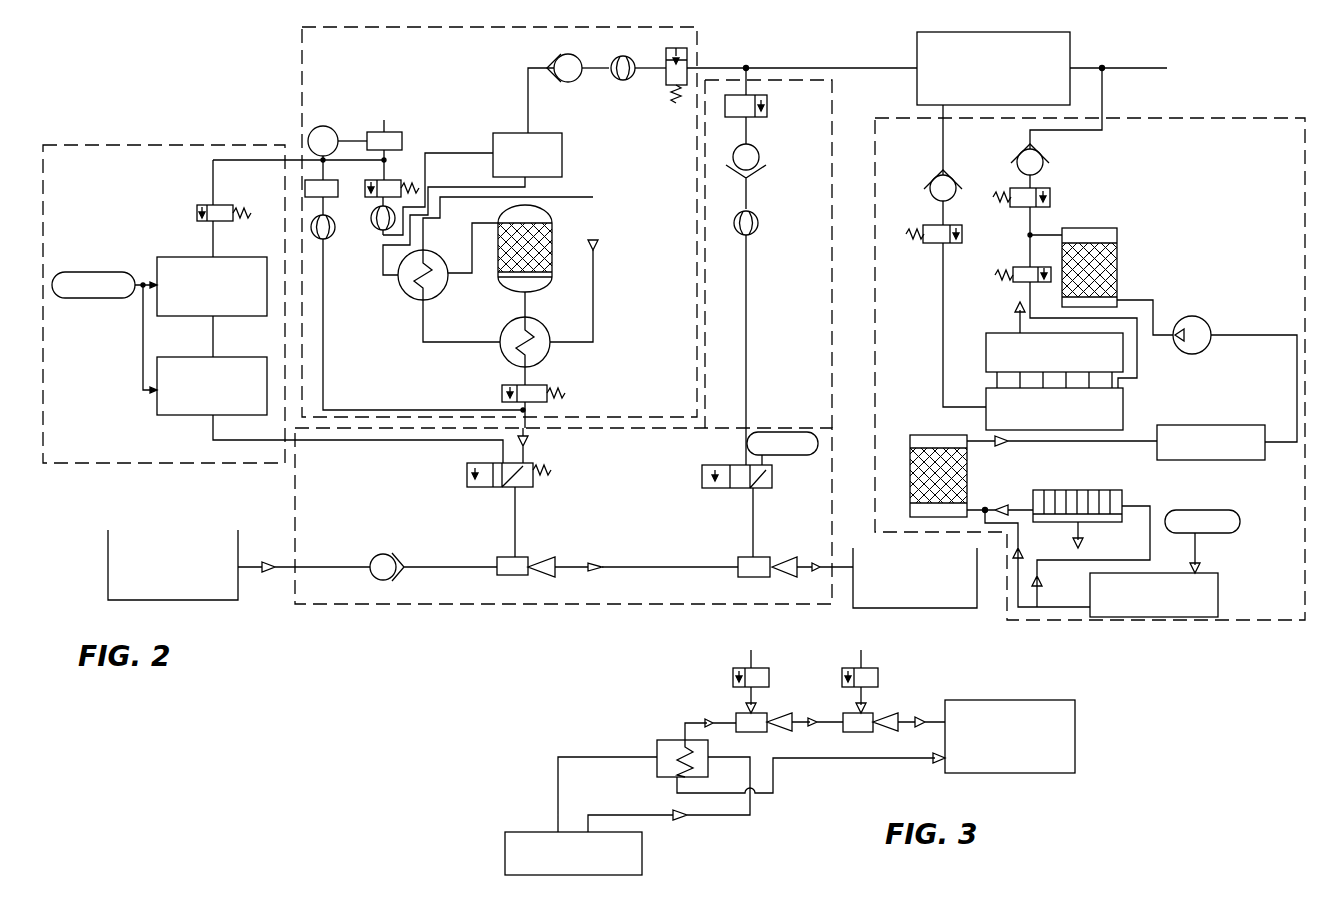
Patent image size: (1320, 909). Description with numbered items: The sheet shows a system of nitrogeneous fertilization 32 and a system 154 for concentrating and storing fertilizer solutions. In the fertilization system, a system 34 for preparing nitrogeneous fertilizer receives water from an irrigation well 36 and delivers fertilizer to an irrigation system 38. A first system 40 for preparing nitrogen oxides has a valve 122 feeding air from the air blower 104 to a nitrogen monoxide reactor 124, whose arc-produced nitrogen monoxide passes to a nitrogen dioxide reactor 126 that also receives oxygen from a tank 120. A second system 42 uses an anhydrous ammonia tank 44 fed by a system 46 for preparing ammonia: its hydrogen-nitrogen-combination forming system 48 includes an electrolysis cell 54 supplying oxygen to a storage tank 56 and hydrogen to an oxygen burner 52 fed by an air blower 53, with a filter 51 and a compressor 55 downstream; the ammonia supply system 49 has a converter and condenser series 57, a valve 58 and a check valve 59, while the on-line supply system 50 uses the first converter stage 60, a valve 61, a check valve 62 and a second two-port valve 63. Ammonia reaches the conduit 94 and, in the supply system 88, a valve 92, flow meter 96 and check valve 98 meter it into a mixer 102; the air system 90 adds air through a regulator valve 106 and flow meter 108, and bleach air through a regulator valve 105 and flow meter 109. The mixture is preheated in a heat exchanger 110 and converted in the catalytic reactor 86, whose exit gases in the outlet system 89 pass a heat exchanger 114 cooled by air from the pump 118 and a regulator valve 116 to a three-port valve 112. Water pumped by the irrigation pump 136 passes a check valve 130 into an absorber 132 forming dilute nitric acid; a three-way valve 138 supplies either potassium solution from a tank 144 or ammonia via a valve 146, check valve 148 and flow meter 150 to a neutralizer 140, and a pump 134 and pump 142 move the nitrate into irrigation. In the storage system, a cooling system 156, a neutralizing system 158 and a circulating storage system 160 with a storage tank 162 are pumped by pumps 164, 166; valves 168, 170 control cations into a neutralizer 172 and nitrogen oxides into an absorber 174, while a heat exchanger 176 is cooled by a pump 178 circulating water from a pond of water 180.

In FIG. 2, the system of nitrogeneous fertilization 32 is at (229, 90).
In FIG. 2, the system for preparing nitrogeneous fertilizer 34 is at (642, 604).
In FIG. 2, the irrigation well 36 is at (200, 600).
In FIG. 2, the irrigation system 38 is at (935, 608).
In FIG. 2, the first system for preparing nitrogen oxides 40 is at (183, 150).
In FIG. 2, the second system for preparing nitrogen oxides 42 is at (697, 53).
In FIG. 2, the anhydrous ammonia tank 44 is at (1072, 48).
In FIG. 2, the system for preparing anhydrous ammonia 46 is at (880, 472).
In FIG. 2, the hydrogen-nitrogen-combination forming system 48 is at (1094, 479).
In FIG. 2, the anhydrous ammonia supply system 49 is at (914, 349).
In FIG. 2, the on-line gaseous ammonia supply system 50 is at (1137, 277).
In FIG. 2, the filter 51 is at (1120, 494).
In FIG. 2, the oxygen burner 52 is at (926, 435).
In FIG. 2, the air blower 53 is at (1040, 578).
In FIG. 2, the electrolysis cell 54 is at (1245, 460).
In FIG. 2, the compressor 55 is at (1205, 322).
In FIG. 2, the oxygen storage tank 56 is at (1240, 516).
In FIG. 2, the converter and condenser series 57 is at (986, 362).
In FIG. 2, the valve 58 is at (955, 226).
In FIG. 2, the check valve 59 is at (930, 195).
In FIG. 2, the first converter stage 60 is at (1118, 234).
In FIG. 2, the valve 61 is at (1050, 196).
In FIG. 2, the check valve 62 is at (1045, 166).
In FIG. 2, the second two-port valve 63 is at (1025, 267).
In FIG. 2, the reactor 86 is at (580, 242).
In FIG. 2, the system for supplying anhydrous ammonia to the reactor 88 is at (592, 99).
In FIG. 2, the system for supplying nitrogen oxides and waste gases 89 is at (554, 377).
In FIG. 2, the system for supplying air 90 is at (405, 138).
In FIG. 2, the two-port infinitely-variable normally-closed valve 92 is at (706, 65).
In FIG. 2, the conduit 94 is at (813, 68).
In FIG. 2, the flow meter 96 is at (631, 57).
In FIG. 2, the check valve 98 is at (576, 57).
In FIG. 2, the mixer 102 is at (562, 141).
In FIG. 2, the air blower 104 is at (377, 132).
In FIG. 2, the two-stage regulator valve 105 is at (333, 182).
In FIG. 2, the two-port infinitely-variable two-stage regulator valve 106 is at (375, 200).
In FIG. 2, the flow meter 108 is at (378, 230).
In FIG. 2, the flow meter 109 is at (325, 240).
In FIG. 2, the heat exchanger 110 is at (440, 290).
In FIG. 2, the three-position three-port valve 112 is at (535, 480).
In FIG. 2, the heat exchanger 114 is at (545, 330).
In FIG. 2, the two-port infinitely-variable normally-closed two-stage regulator valve 116 is at (543, 402).
In FIG. 2, the pump 118 is at (600, 250).
In FIG. 2, the tank 120 is at (97, 273).
In FIG. 2, the two-port infinitely-variable normally-closed valve 122 is at (200, 207).
In FIG. 2, the nitrogen monoxide reactor 124 is at (185, 317).
In FIG. 2, the nitrogen dioxide reactor 126 is at (185, 416).
In FIG. 2, the check valve 130 is at (372, 556).
In FIG. 2, the absorber 132 is at (515, 576).
In FIG. 2, the pump 134 is at (600, 560).
In FIG. 2, the irrigation pump 136 is at (270, 576).
In FIG. 2, the three-way three-port valve 138 is at (712, 490).
In FIG. 2, the neutralizer 140 is at (755, 577).
In FIG. 2, the pump 142 is at (815, 575).
In FIG. 2, the tank 144 is at (775, 433).
In FIG. 2, the two-port infinitely-variable normally-closed valve 146 is at (768, 110).
In FIG. 2, the check valve 148 is at (762, 155).
In FIG. 2, the flow meter 150 is at (760, 220).
In FIG. 3, the system for concentrating and storing fertilizers 154 is at (643, 681).
In FIG. 3, the cooling system 156 is at (718, 818).
In FIG. 3, the neutralizing system 158 is at (793, 693).
In FIG. 3, the circulating storage system 160 is at (945, 700).
In FIG. 3, the storage tank 162 is at (1020, 773).
In FIG. 3, the pump 164 is at (922, 716).
In FIG. 3, the pump 166 is at (920, 764).
In FIG. 3, the two-port continuously-variable valve 168 is at (740, 668).
In FIG. 3, the two-port continuously-variable valve 170 is at (870, 668).
In FIG. 3, the neutralizer 172 is at (757, 732).
In FIG. 3, the absorber 174 is at (865, 732).
In FIG. 3, the heat exchanger 176 is at (660, 740).
In FIG. 3, the pump 178 is at (680, 822).
In FIG. 3, the pond of water 180 is at (642, 860).